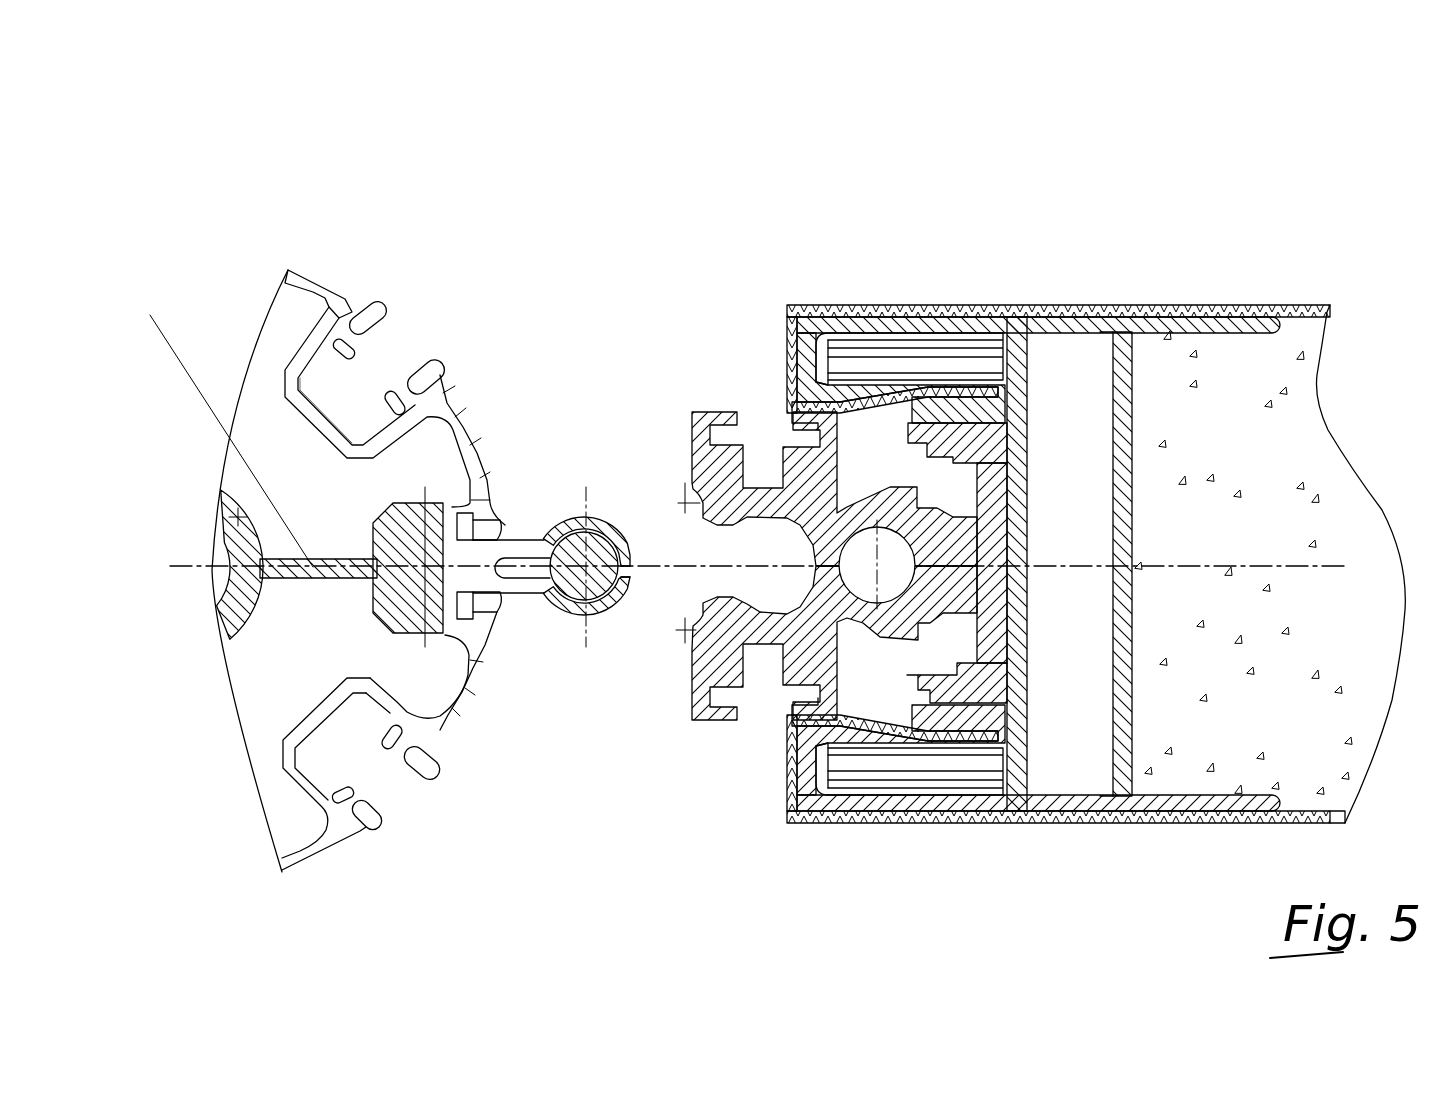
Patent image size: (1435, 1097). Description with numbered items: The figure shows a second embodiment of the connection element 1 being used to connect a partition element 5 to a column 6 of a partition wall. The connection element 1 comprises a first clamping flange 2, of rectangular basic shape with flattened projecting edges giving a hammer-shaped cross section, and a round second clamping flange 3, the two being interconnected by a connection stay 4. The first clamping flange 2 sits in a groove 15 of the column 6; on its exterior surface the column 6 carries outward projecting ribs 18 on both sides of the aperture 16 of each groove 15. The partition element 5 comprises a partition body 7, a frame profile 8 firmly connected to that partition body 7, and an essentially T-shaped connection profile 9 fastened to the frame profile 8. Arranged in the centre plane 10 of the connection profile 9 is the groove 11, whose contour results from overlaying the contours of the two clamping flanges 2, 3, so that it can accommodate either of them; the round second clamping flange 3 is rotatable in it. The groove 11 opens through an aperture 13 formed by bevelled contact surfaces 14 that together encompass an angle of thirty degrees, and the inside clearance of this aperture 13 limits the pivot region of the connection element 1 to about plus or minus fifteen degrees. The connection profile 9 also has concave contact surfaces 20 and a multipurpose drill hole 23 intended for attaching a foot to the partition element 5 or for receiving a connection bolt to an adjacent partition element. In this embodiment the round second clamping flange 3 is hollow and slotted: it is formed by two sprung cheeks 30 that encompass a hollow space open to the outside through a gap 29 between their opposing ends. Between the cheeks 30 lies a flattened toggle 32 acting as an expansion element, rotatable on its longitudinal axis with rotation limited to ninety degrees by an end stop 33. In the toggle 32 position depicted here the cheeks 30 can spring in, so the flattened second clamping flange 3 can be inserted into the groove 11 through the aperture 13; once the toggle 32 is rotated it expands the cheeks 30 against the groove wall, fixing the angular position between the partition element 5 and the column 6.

The connection element 1 is at (518, 540).
The first clamping flange 2 is at (406, 603).
The second clamping flange 3 is at (603, 566).
The connection stay 4 is at (510, 593).
The partition element 5 is at (1104, 460).
The column 6 is at (309, 236).
The partition body 7 is at (1208, 348).
The frame profile 8 is at (1010, 333).
The connection profile 9 is at (849, 421).
The centre plane 10 is at (1286, 562).
The groove 11 is at (765, 745).
The aperture 13 is at (732, 553).
The bevelled contact surfaces 14 is at (680, 628).
The groove 15 is at (328, 377).
The aperture 16 is at (397, 347).
The ribs 18 is at (375, 303).
The concave contact surfaces 20 is at (727, 597).
The multipurpose drill hole 23 is at (888, 540).
The gap 29 is at (633, 562).
The cheeks 30 is at (589, 518).
The toggle 32 is at (600, 615).
The end stop 33 is at (560, 608).